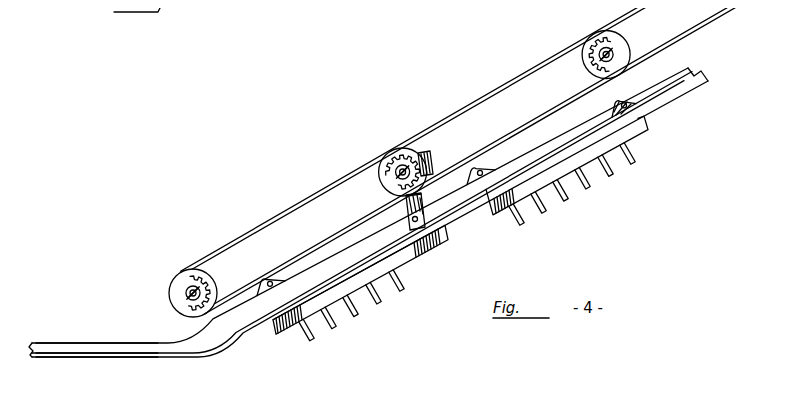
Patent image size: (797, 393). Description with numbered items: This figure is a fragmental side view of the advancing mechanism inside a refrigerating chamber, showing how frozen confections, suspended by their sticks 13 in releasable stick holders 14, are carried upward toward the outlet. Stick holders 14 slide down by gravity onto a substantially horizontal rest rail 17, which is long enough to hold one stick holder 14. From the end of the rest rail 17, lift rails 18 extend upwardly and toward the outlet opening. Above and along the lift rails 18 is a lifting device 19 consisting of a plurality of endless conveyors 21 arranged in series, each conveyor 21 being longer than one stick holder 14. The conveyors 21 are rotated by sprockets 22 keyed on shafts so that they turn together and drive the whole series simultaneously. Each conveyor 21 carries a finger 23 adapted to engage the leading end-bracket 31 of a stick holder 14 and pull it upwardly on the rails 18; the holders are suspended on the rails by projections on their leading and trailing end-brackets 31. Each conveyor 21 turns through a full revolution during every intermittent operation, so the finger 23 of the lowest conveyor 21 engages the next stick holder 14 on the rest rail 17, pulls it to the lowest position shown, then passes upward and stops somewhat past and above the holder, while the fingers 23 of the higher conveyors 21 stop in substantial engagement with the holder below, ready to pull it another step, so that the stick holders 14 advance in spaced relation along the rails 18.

The sticks 13 is at (391, 282).
The stick holders 14 is at (430, 234).
The rest rail 17 is at (90, 342).
The lift rails 18 is at (683, 62).
The lifting device 19 is at (394, 114).
The endless conveyors 21 is at (293, 195).
The sprockets 22 is at (173, 290).
The finger 23 is at (426, 142).
The end-brackets 31 is at (414, 198).